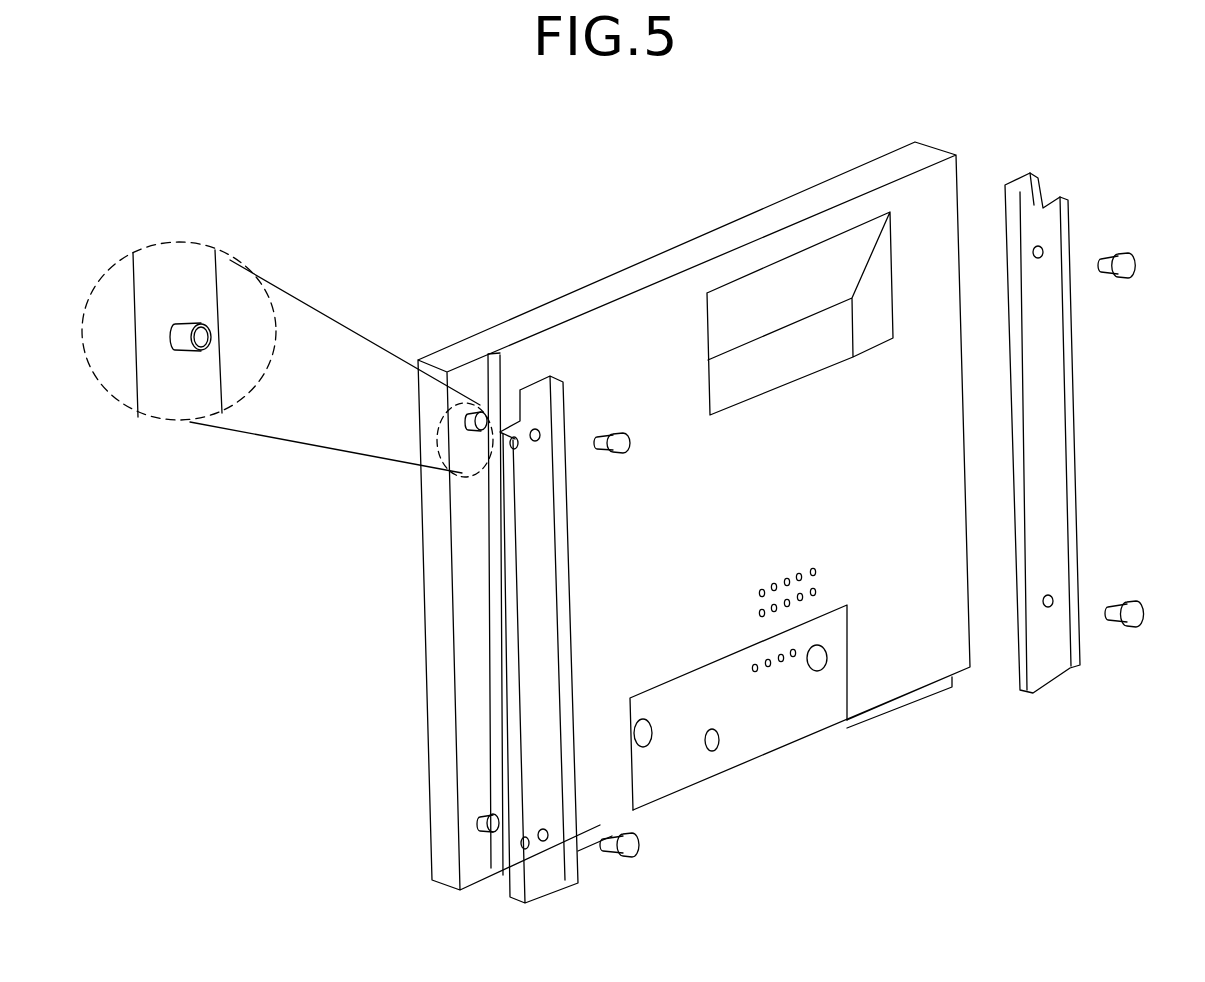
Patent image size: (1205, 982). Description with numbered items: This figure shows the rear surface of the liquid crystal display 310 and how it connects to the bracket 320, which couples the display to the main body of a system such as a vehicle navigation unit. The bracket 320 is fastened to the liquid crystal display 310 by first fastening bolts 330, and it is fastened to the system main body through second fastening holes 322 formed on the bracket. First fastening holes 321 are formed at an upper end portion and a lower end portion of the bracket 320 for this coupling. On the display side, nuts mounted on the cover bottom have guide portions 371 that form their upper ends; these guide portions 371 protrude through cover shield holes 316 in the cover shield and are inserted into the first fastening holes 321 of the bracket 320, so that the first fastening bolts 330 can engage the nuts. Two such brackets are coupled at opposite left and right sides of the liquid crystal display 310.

The liquid crystal display 310 is at (694, 206).
The cover shield hole 316 is at (184, 323).
The bracket 320 is at (531, 362).
The first fastening hole 321 is at (540, 433).
The second fastening hole 322 is at (512, 446).
The first fastening bolt 330 is at (648, 458).
The guide portion 371 is at (189, 350).